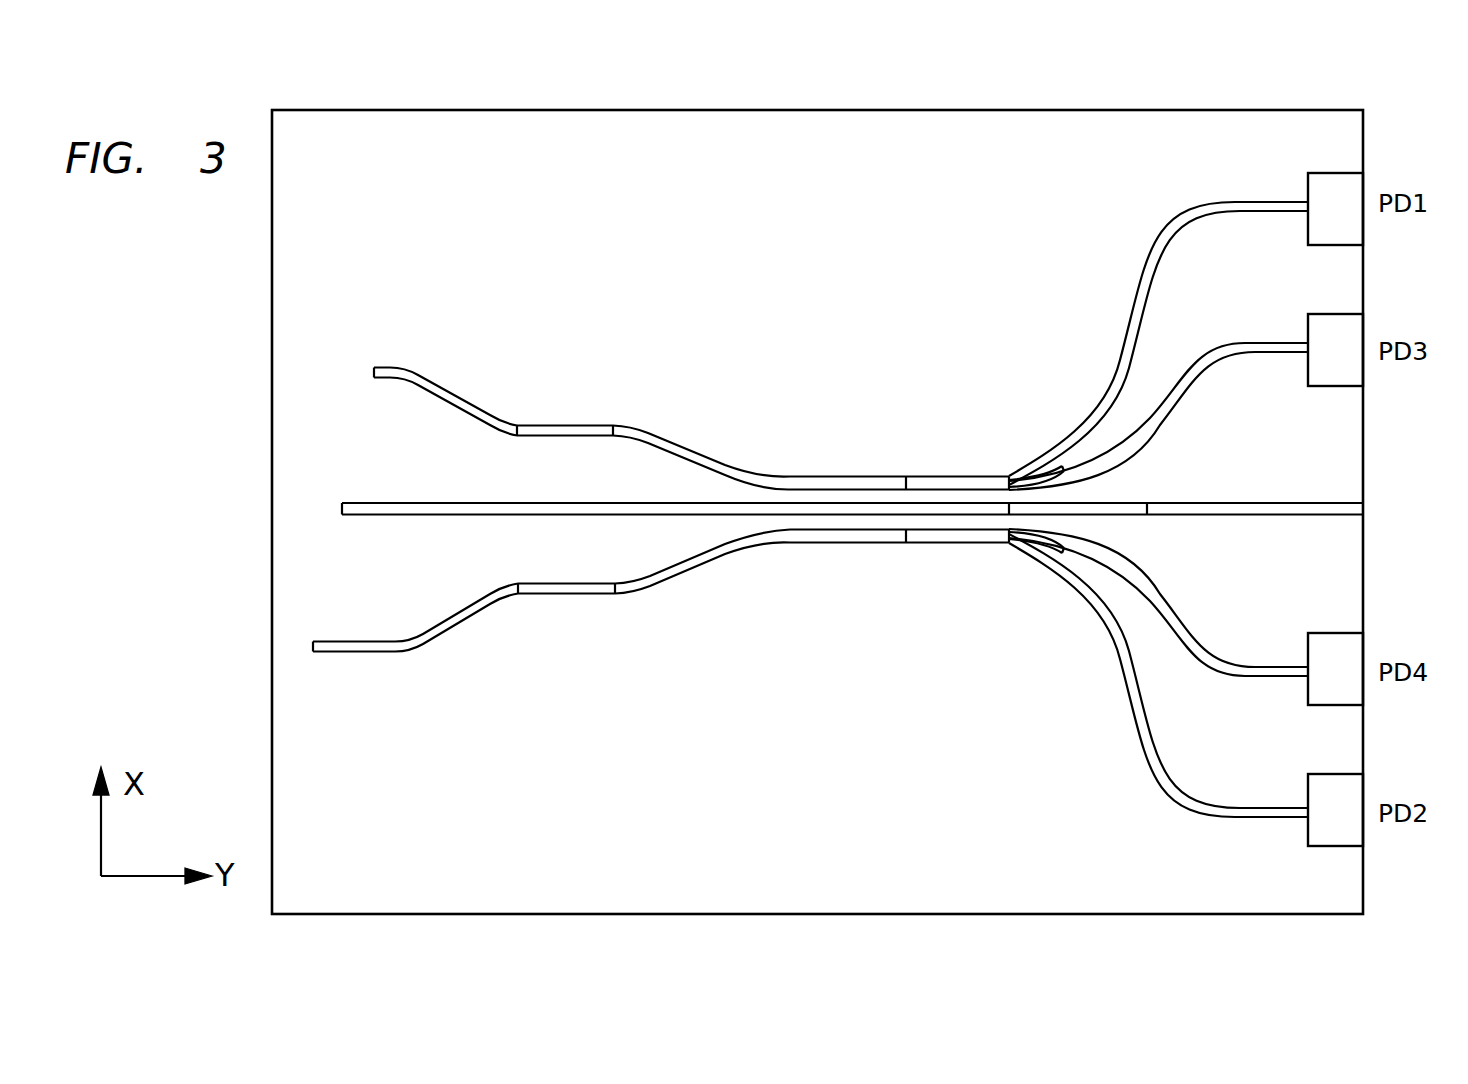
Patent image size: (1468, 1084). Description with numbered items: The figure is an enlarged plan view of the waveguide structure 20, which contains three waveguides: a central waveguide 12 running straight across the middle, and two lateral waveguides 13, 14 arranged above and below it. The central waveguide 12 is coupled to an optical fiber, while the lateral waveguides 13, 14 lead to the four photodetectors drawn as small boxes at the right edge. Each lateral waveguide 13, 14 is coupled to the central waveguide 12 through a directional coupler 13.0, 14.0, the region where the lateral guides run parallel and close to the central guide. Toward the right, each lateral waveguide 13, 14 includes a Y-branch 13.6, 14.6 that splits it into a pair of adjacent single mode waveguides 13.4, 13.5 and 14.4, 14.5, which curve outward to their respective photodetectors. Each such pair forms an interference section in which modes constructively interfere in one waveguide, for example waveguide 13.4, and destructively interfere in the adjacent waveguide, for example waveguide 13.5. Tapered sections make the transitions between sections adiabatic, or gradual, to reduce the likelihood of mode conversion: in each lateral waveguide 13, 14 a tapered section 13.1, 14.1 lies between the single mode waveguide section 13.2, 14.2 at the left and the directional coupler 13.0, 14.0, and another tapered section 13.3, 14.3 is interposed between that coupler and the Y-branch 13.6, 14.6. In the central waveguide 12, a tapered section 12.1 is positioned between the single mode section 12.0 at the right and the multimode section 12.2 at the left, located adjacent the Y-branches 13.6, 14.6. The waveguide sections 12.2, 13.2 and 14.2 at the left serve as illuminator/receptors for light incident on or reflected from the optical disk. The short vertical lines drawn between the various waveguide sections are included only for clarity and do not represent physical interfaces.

The waveguide structure 20 is at (867, 295).
The central waveguide 12 is at (852, 511).
The single mode section 12.0 is at (1205, 520).
The tapered section 12.1 is at (1092, 508).
The multimode section 12.2 is at (387, 509).
The lateral waveguide 13 is at (841, 346).
The directional coupler 13.0 is at (796, 483).
The tapered section 13.1 is at (566, 432).
The single mode waveguide section 13.2 is at (441, 380).
The tapered section 13.3 is at (944, 483).
The single mode waveguide 13.4 is at (1117, 378).
The single mode waveguide 13.5 is at (1163, 395).
The Y-branch 13.6 is at (1063, 466).
The lateral waveguide 14 is at (810, 673).
The directional coupler 14.0 is at (796, 538).
The tapered section 14.1 is at (568, 594).
The single mode waveguide section 14.2 is at (433, 651).
The tapered section 14.3 is at (936, 540).
The single mode waveguide 14.4 is at (1120, 656).
The single mode waveguide 14.5 is at (1163, 613).
The Y-branch 14.6 is at (1063, 553).